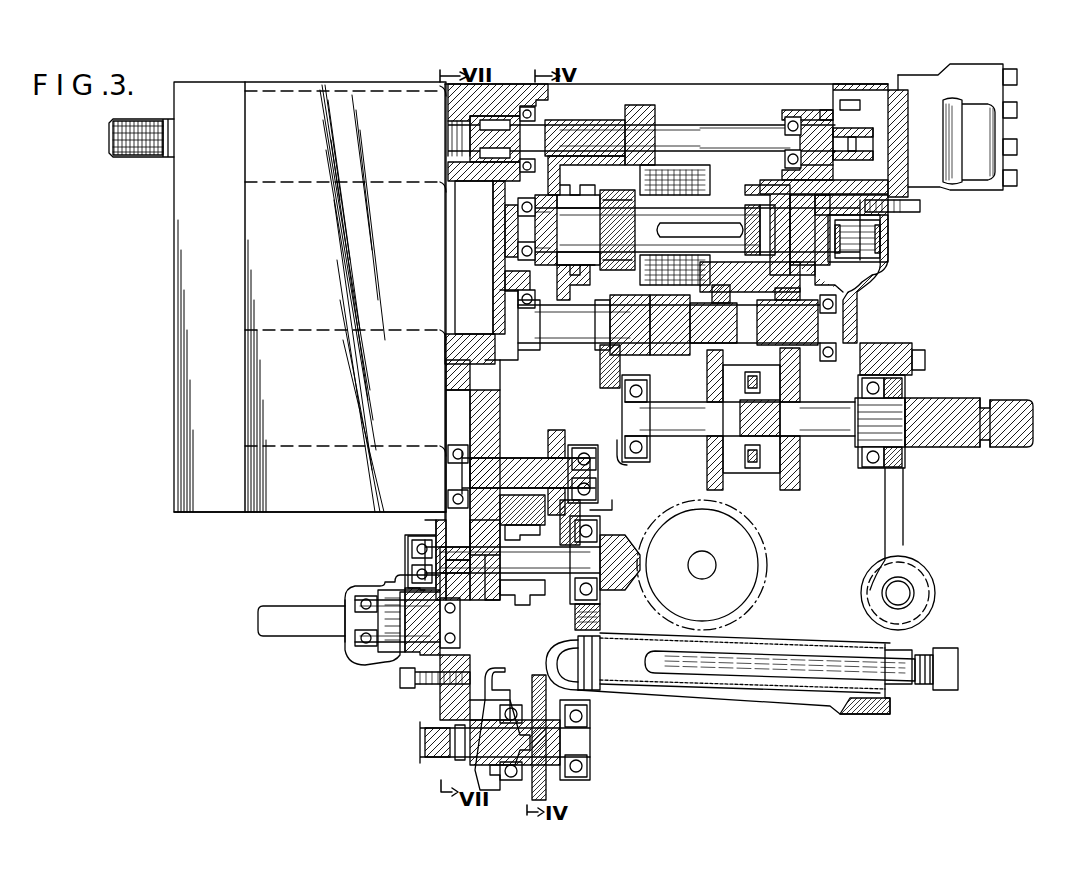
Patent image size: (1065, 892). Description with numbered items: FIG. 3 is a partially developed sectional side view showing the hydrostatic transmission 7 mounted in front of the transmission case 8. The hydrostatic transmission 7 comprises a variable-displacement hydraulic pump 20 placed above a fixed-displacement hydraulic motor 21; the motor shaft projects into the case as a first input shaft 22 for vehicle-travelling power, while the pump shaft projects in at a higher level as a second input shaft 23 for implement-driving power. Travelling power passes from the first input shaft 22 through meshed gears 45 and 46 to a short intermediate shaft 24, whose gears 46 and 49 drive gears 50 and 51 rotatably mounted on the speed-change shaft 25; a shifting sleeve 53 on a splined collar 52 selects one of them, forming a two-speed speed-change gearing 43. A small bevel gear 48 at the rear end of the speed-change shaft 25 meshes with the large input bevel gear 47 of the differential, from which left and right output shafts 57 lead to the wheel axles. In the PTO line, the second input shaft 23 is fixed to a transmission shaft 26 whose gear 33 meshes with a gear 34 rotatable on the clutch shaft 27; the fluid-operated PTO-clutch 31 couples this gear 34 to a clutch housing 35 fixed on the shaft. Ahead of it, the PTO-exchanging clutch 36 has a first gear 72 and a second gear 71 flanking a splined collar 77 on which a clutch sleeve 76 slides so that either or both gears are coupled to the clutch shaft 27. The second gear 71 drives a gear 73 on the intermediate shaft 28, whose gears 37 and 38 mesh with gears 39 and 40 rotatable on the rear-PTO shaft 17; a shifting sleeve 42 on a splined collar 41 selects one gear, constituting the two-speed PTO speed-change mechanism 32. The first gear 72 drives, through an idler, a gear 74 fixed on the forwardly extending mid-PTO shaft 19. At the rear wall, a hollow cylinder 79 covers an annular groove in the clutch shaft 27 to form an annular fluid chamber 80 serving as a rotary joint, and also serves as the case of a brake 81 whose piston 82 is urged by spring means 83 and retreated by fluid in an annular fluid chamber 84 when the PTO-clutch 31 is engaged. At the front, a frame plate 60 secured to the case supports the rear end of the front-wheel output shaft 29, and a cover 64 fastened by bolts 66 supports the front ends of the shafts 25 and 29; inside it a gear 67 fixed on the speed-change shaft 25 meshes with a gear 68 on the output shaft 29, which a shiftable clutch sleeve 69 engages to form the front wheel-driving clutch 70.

The hydrostatic transmission 7 is at (298, 490).
The transmission case 8 is at (748, 700).
The rear-PTO shaft 17 is at (834, 440).
The mid-PTO shaft 19 is at (486, 748).
The hydraulic pump 20 is at (343, 108).
The hydraulic motor 21 is at (244, 420).
The first input shaft 22 is at (448, 400).
The second input shaft 23 is at (488, 116).
The intermediate shaft 24 is at (514, 470).
The speed-change shaft 25 is at (540, 580).
The transmission shaft 26 is at (712, 132).
The clutch shaft 27 is at (704, 215).
The intermediate shaft 28 is at (664, 346).
The output shaft 29 is at (312, 632).
The PTO-clutch 31 is at (660, 165).
The PTO speed-change mechanism 32 is at (858, 355).
The gear 33 is at (640, 108).
The gear 34 is at (652, 300).
The clutch housing 35 is at (665, 312).
The PTO-exchanging clutch 36 is at (585, 185).
The gear 37 is at (704, 306).
The gear 38 is at (790, 300).
The gear 39 is at (708, 470).
The gear 40 is at (800, 488).
The splined collar 41 is at (750, 388).
The shifting sleeve 42 is at (780, 470).
The speed-change gearing 43 is at (592, 512).
The gear 45 is at (468, 334).
The gear 46 is at (498, 435).
The input bevel gear 47 is at (770, 590).
The bevel gear 48 is at (640, 572).
The gear 49 is at (568, 445).
The gear 50 is at (482, 601).
The gear 51 is at (555, 598).
The splined collar 52 is at (517, 592).
The shifting sleeve 53 is at (508, 530).
The output shaft 57 is at (714, 568).
The frame plate 60 is at (452, 700).
The cover 64 is at (410, 550).
The bolts 66 is at (412, 690).
The gear 67 is at (438, 520).
The gear 68 is at (412, 668).
The shiftable clutch sleeve 69 is at (385, 662).
The front wheel-driving clutch 70 is at (382, 590).
The second gear 71 is at (604, 200).
The first gear 72 is at (516, 190).
The gear 73 is at (615, 384).
The gear 74 is at (548, 790).
The clutch sleeve 76 is at (570, 268).
The splined collar 77 is at (506, 232).
The hollow cylinder 79 is at (776, 195).
The annular fluid chamber 80 is at (752, 195).
The brake 81 is at (778, 283).
The piston 82 is at (872, 272).
The spring means 83 is at (898, 232).
The annular fluid chamber 84 is at (822, 125).